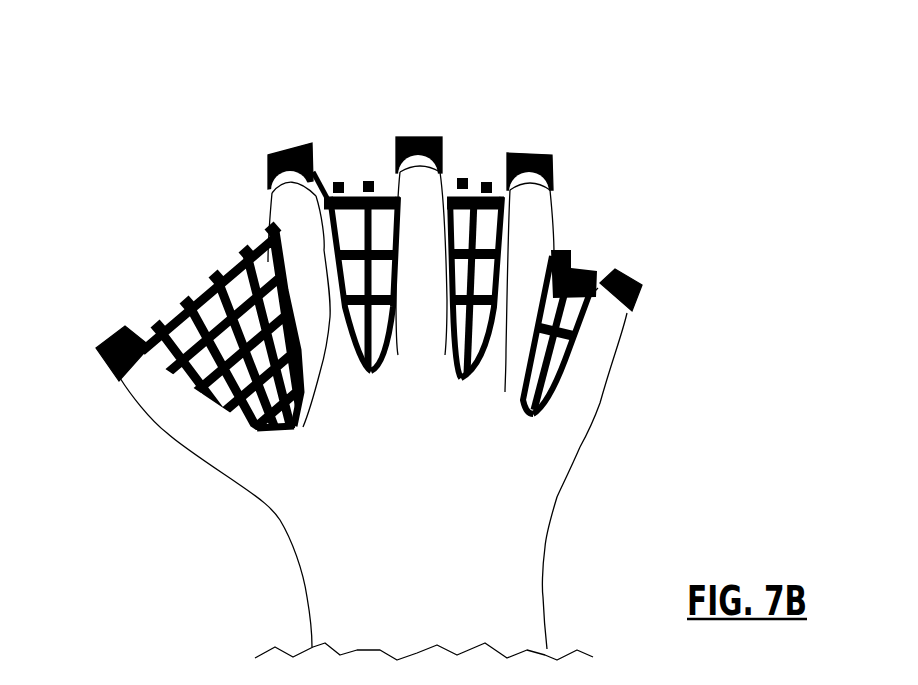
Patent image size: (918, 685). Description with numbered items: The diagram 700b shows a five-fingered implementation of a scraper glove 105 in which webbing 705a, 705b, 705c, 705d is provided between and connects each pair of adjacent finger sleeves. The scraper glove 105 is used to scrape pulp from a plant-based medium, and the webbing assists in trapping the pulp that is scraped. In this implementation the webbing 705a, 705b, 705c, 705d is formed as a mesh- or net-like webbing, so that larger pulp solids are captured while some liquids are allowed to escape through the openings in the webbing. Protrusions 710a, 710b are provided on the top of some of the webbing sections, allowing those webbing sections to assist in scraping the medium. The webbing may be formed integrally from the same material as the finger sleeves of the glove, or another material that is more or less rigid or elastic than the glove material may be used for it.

The scraper glove 105 is at (589, 516).
The diagram 700b is at (833, 114).
The webbing 705a is at (161, 255).
The webbing 705b is at (352, 146).
The webbing 705c is at (458, 126).
The webbing 705d is at (590, 229).
The protrusion 710a is at (157, 326).
The protrusion 710b is at (490, 186).